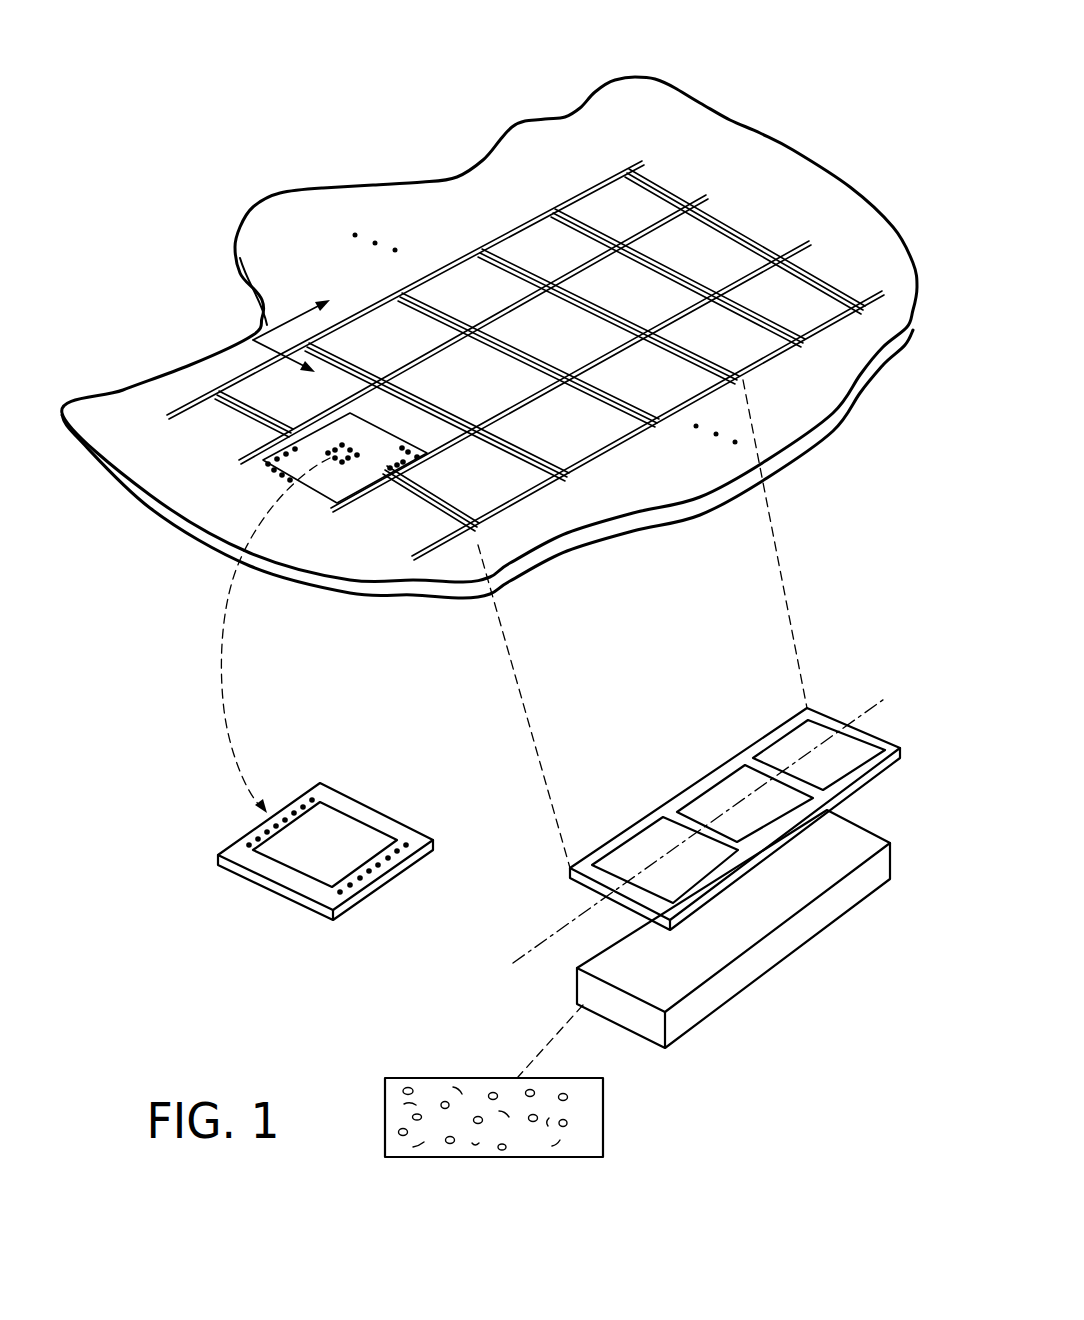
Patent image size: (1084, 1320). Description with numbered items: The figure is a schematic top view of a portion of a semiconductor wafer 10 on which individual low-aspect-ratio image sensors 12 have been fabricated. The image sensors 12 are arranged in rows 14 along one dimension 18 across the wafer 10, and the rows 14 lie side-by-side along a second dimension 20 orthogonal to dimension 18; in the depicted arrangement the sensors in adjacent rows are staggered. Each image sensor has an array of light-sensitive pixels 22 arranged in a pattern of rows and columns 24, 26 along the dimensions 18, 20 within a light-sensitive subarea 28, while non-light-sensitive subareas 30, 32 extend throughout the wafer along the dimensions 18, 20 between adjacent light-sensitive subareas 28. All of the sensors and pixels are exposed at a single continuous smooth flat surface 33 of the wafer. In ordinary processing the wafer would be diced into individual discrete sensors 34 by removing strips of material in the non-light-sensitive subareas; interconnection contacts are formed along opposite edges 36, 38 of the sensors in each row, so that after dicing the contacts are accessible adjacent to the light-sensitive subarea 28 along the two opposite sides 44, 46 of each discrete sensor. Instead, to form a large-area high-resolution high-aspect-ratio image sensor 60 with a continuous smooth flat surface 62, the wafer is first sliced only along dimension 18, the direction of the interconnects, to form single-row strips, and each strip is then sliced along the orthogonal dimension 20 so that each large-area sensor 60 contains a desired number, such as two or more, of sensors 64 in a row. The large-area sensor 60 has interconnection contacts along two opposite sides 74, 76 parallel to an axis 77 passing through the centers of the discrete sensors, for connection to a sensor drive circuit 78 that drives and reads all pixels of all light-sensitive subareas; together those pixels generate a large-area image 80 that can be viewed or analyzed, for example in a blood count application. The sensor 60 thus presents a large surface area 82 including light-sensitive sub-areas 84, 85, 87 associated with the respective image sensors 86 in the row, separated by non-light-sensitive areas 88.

The semiconductor wafer 10 is at (410, 598).
The image sensors 12 is at (607, 462).
The rows 14 is at (486, 298).
The dimension 18 is at (308, 304).
The second dimension 20 is at (300, 368).
The light-sensitive pixels 22 is at (425, 470).
The rows of pixels 24 is at (258, 471).
The columns of pixels 26 is at (258, 457).
The light-sensitive subarea 28 is at (366, 496).
The non-light-sensitive subarea 30 is at (487, 412).
The non-light-sensitive subarea 32 is at (488, 376).
The continuous smooth flat surface 33 is at (574, 164).
The discrete sensors 34 is at (220, 688).
The edge of image sensor 36 is at (412, 843).
The edge of image sensor 38 is at (314, 788).
The side of discrete sensor 44 is at (311, 854).
The side of discrete sensor 46 is at (390, 898).
The large-area high-resolution high-aspect-ratio image sensor 60 is at (678, 815).
The continuous smooth flat surface 62 is at (778, 742).
The sensors 64 is at (637, 893).
The side of large-area image sensor 74 is at (765, 866).
The side of large-area image sensor 76 is at (652, 798).
The axis 77 is at (540, 947).
The sensor drive circuit 78 is at (870, 830).
The large-area image 80 is at (483, 1157).
The large surface area 82 is at (587, 870).
The light-sensitive sub-area 84 is at (650, 892).
The light-sensitive sub-area 85 is at (732, 836).
The image sensors 86 is at (610, 843).
The light-sensitive sub-area 87 is at (803, 779).
The non-light-sensitive areas 88 is at (700, 823).